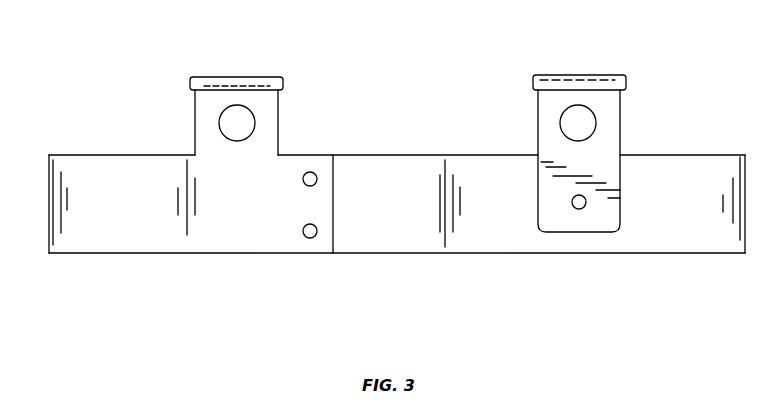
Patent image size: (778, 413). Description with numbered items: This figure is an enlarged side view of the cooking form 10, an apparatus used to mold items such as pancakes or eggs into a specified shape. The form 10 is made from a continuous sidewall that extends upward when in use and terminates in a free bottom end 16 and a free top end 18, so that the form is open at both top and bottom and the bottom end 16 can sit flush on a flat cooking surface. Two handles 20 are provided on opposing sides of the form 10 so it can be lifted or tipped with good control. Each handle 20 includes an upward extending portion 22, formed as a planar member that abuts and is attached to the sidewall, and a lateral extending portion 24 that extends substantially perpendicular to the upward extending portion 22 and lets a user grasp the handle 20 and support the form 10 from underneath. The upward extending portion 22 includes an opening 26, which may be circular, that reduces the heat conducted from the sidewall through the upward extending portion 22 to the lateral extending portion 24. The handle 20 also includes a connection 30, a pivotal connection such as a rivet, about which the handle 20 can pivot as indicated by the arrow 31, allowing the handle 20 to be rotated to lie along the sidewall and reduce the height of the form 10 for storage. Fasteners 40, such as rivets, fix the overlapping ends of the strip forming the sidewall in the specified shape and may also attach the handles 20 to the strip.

The cooking form 10 is at (362, 170).
The free bottom end 16 is at (407, 254).
The free top end 18 is at (408, 153).
The handle 20 is at (257, 78).
The upward extending portion 22 is at (612, 143).
The lateral extending portion 24 is at (583, 75).
The opening 26 is at (222, 130).
The connection 30 is at (585, 208).
The arrow 31 is at (501, 146).
The fastener 40 is at (310, 238).